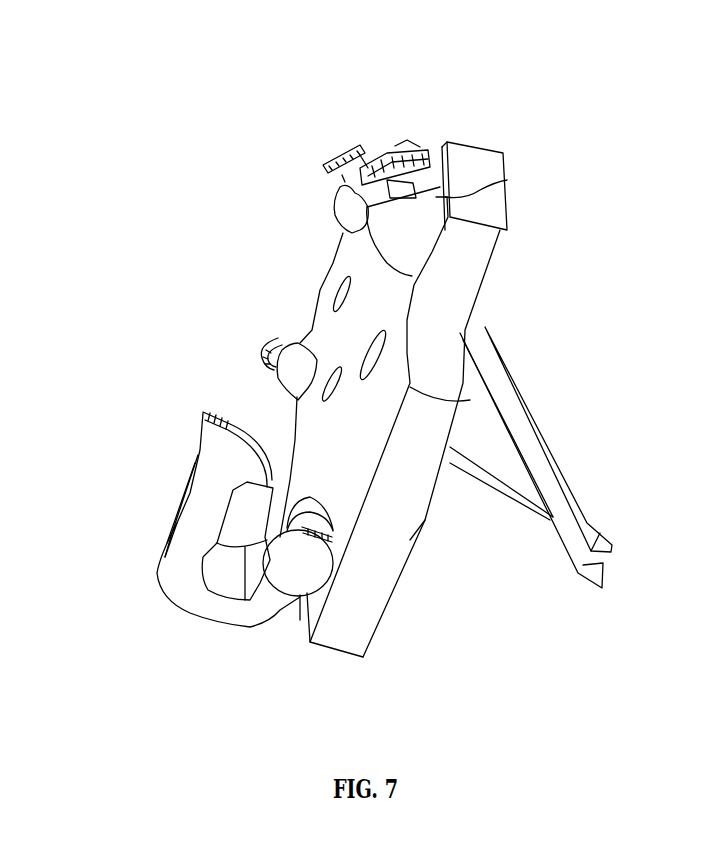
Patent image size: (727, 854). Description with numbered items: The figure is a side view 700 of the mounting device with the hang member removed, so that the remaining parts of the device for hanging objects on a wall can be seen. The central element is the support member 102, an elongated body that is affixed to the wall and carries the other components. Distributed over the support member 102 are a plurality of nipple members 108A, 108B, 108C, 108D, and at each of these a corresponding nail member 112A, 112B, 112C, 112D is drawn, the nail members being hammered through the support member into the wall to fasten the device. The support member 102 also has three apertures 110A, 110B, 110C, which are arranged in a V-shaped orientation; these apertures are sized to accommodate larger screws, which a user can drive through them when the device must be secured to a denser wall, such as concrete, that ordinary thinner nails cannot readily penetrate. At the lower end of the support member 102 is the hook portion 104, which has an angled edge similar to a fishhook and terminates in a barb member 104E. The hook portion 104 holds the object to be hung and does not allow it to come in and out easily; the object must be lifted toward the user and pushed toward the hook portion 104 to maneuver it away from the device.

The side view 700 is at (280, 71).
The support member 102 is at (440, 427).
The hook portion 104 is at (170, 497).
The barb member 104E is at (203, 412).
The nipple member 108A is at (338, 200).
The nipple member 108B is at (295, 338).
The nipple member 108C is at (508, 178).
The nipple member 108D is at (255, 530).
The aperture 110A is at (338, 290).
The aperture 110B is at (373, 355).
The aperture 110C is at (322, 398).
The nail member 112A is at (346, 142).
The nail member 112B is at (263, 352).
The nail member 112C is at (410, 138).
The nail member 112D is at (302, 594).